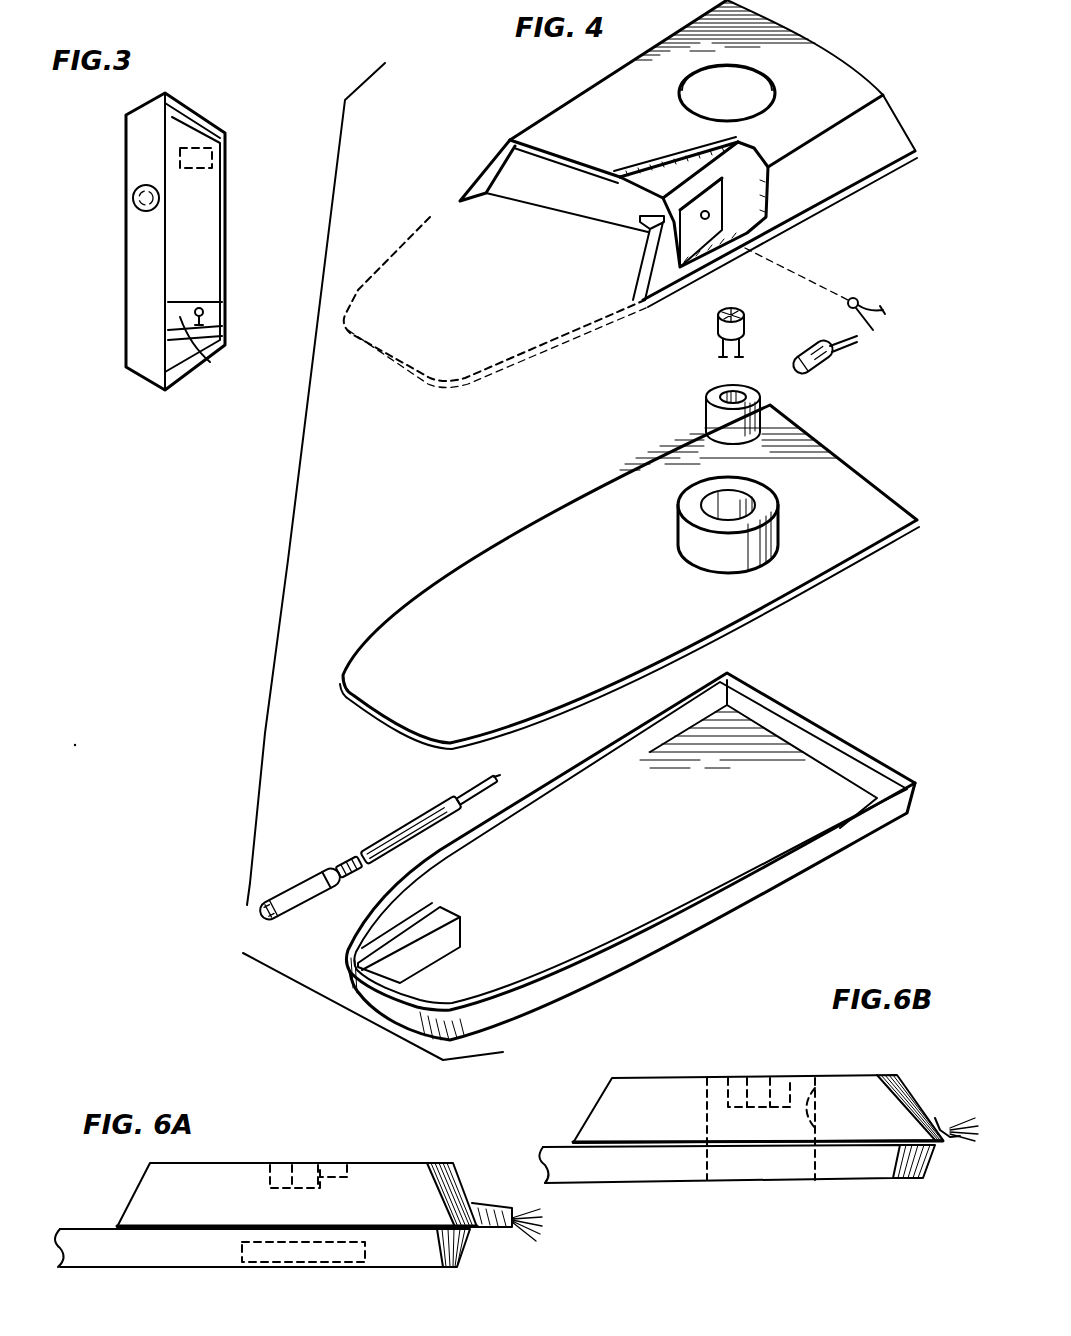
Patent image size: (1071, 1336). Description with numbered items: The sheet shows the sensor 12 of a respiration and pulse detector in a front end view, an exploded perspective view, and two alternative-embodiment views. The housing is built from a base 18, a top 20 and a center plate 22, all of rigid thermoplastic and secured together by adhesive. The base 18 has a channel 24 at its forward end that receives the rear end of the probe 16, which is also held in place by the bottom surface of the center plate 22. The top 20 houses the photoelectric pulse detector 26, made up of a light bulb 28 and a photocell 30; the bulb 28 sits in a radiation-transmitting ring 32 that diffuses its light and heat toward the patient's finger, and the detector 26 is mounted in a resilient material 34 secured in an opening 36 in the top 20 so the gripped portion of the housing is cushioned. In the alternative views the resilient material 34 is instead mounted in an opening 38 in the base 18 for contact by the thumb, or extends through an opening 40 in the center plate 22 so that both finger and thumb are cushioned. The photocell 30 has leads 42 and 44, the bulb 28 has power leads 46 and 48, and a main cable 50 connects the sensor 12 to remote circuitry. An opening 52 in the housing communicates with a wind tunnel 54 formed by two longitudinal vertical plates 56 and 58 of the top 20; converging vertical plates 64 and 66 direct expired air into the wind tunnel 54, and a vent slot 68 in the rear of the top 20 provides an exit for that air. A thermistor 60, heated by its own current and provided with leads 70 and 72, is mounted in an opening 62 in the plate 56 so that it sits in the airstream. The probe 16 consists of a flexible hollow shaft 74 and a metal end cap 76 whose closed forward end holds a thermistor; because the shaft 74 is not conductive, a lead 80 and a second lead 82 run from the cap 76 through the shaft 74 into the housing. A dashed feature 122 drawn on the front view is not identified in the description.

In FIG. 3, the sensor 12 is at (168, 200).
In FIG. 4, the sensor 12 is at (527, 72).
In FIG. 6A, the sensor 12 is at (298, 1192).
In FIG. 6B, the sensor 12 is at (758, 1096).
In FIG. 3, the probe 16 is at (108, 195).
In FIG. 4, the probe 16 is at (393, 863).
In FIG. 3, the base 18 is at (126, 290).
In FIG. 4, the base 18 is at (630, 856).
In FIG. 6A, the base 18 is at (262, 1269).
In FIG. 6B, the base 18 is at (737, 1130).
In FIG. 3, the top 20 is at (228, 246).
In FIG. 4, the top 20 is at (630, 194).
In FIG. 6A, the top 20 is at (297, 1186).
In FIG. 6B, the top 20 is at (761, 1096).
In FIG. 3, the center plate 22 is at (168, 337).
In FIG. 4, the center plate 22 is at (577, 598).
In FIG. 4, the channel 24 is at (450, 903).
In FIG. 6A, the photoelectric pulse detector 26 is at (323, 1131).
In FIG. 6B, the photoelectric pulse detector 26 is at (755, 1050).
In FIG. 4, the light bulb 28 is at (850, 373).
In FIG. 4, the photocell 30 is at (725, 335).
In FIG. 6A, the photocell 30 is at (303, 1180).
In FIG. 6B, the photocell 30 is at (758, 1085).
In FIG. 4, the radiation-transmitting ring 32 is at (706, 413).
In FIG. 6A, the radiation-transmitting ring 32 is at (330, 1180).
In FIG. 6B, the radiation-transmitting ring 32 is at (780, 1082).
In FIG. 4, the resilient material 34 is at (783, 527).
In FIG. 6A, the resilient material 34 is at (330, 1258).
In FIG. 6B, the resilient material 34 is at (787, 1161).
In FIG. 4, the opening 36 is at (763, 72).
In FIG. 6A, the opening 36 is at (347, 1177).
In FIG. 6A, the opening 38 is at (240, 1250).
In FIG. 6B, the opening 38 is at (707, 1158).
In FIG. 6B, the opening 40 is at (817, 1088).
In FIG. 4, the lead 42 is at (720, 342).
In FIG. 4, the lead 44 is at (743, 342).
In FIG. 4, the power lead 46 is at (858, 338).
In FIG. 4, the power lead 48 is at (843, 352).
In FIG. 6A, the main cable 50 is at (495, 1211).
In FIG. 6B, the main cable 50 is at (935, 1118).
In FIG. 3, the opening 52 is at (202, 206).
In FIG. 4, the opening 52 is at (470, 218).
In FIG. 3, the wind tunnel 54 is at (210, 362).
In FIG. 4, the wind tunnel 54 is at (690, 187).
In FIG. 4, the vertical plate 56 is at (713, 199).
In FIG. 4, the vertical plate 58 is at (727, 141).
In FIG. 3, the thermistor 60 is at (205, 311).
In FIG. 4, the thermistor 60 is at (832, 289).
In FIG. 4, the opening 62 is at (708, 220).
In FIG. 3, the vertical plate 64 is at (201, 267).
In FIG. 4, the vertical plate 64 is at (555, 192).
In FIG. 3, the vertical plate 66 is at (205, 334).
In FIG. 4, the vertical plate 66 is at (668, 240).
In FIG. 6A, the vent slot 68 is at (455, 1266).
In FIG. 6B, the vent slot 68 is at (933, 1155).
In FIG. 4, the lead 70 is at (857, 320).
In FIG. 4, the lead 72 is at (873, 308).
In FIG. 3, the hollow shaft 74 is at (142, 184).
In FIG. 4, the hollow shaft 74 is at (445, 813).
In FIG. 3, the end cap 76 is at (143, 212).
In FIG. 4, the end cap 76 is at (280, 917).
In FIG. 4, the lead 80 is at (480, 786).
In FIG. 4, the second lead 82 is at (482, 782).
In FIG. 3, the label window 122 is at (200, 143).